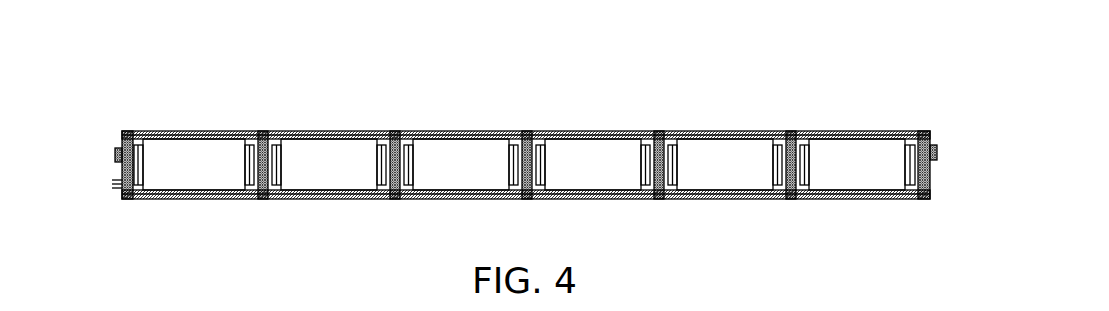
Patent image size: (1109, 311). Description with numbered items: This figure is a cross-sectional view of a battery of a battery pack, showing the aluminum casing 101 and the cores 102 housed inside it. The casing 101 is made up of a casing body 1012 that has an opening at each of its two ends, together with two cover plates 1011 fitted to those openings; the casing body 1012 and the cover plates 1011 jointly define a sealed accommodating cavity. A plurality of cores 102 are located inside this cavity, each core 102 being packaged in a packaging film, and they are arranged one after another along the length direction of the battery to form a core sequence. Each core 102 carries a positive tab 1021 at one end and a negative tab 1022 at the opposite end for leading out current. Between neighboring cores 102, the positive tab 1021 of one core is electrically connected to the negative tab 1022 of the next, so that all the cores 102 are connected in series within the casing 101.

The casing 101 is at (488, 19).
The cover plate 1011 is at (123, 160).
The casing body 1012 is at (702, 198).
The core 102 is at (307, 152).
The positive tab 1021 is at (250, 183).
The negative tab 1022 is at (274, 168).